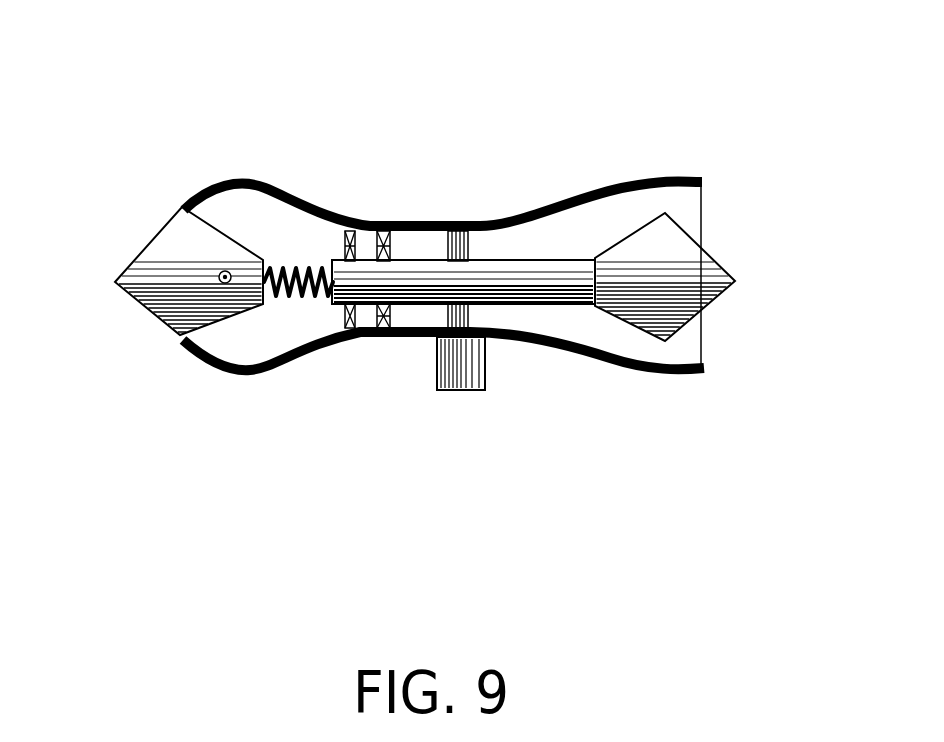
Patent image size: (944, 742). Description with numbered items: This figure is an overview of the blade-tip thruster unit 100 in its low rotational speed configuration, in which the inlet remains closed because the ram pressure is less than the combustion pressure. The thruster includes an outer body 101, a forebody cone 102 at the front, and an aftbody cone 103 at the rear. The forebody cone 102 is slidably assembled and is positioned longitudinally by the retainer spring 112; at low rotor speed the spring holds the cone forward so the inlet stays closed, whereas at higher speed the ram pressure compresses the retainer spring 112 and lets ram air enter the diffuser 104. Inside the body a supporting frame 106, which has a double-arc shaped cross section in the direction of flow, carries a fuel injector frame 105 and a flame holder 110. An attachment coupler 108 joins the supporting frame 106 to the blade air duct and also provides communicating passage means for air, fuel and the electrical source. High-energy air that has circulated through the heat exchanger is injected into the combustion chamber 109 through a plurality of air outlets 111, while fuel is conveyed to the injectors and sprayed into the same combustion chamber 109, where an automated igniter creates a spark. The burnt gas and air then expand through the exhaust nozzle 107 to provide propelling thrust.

The thruster unit 100 is at (203, 90).
The outer body 101 is at (223, 178).
The forebody cone 102 is at (132, 262).
The aftbody cone 103 is at (732, 258).
The diffuser 104 is at (253, 213).
The fuel injector frame 105 is at (370, 220).
The supporting frame 106 is at (483, 222).
The exhaust nozzle 107 is at (653, 350).
The attachment coupler 108 is at (487, 393).
The combustion chamber 109 is at (430, 315).
The flame holder 110 is at (375, 333).
The air outlets 111 is at (222, 281).
The retainer spring 112 is at (300, 297).